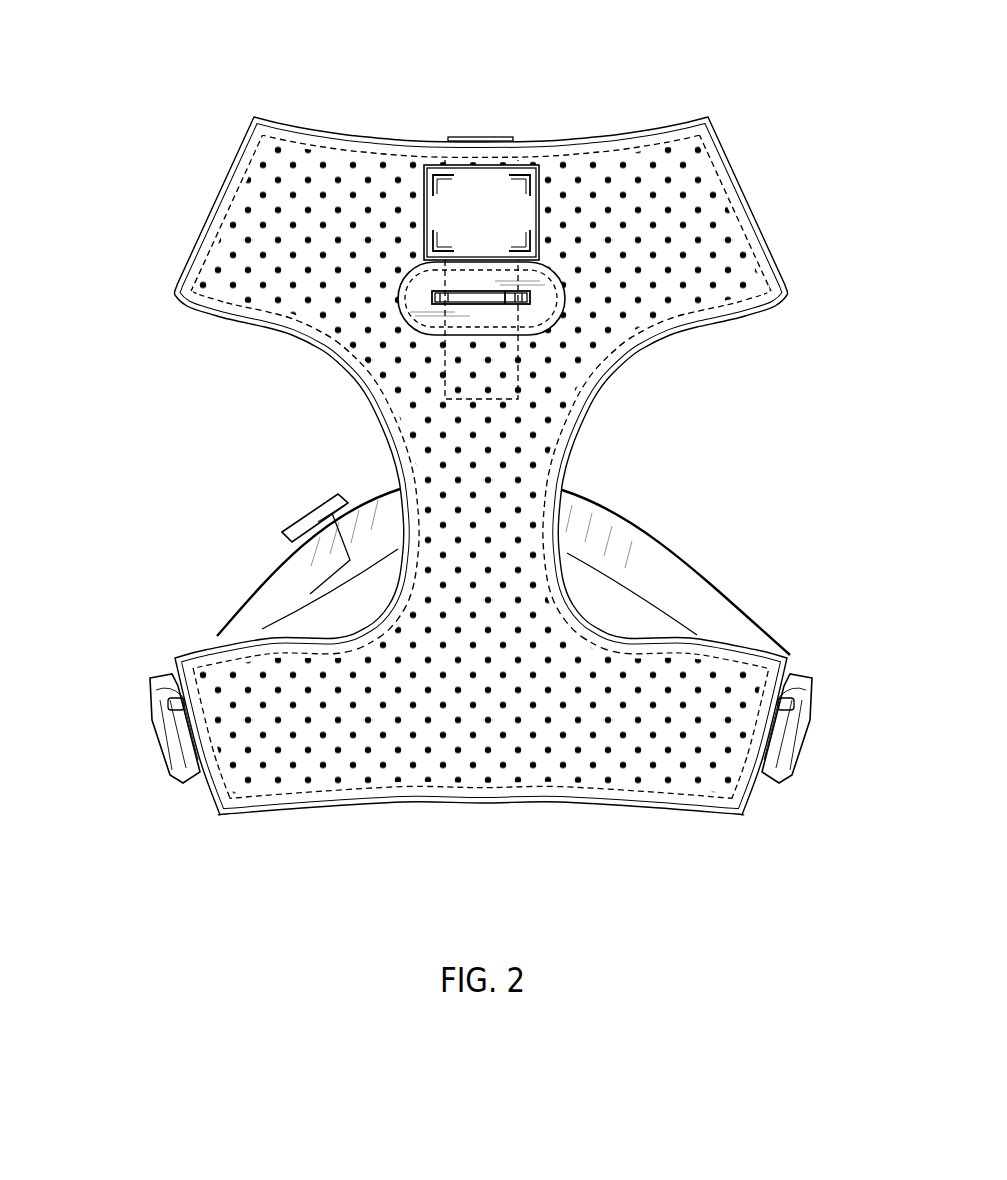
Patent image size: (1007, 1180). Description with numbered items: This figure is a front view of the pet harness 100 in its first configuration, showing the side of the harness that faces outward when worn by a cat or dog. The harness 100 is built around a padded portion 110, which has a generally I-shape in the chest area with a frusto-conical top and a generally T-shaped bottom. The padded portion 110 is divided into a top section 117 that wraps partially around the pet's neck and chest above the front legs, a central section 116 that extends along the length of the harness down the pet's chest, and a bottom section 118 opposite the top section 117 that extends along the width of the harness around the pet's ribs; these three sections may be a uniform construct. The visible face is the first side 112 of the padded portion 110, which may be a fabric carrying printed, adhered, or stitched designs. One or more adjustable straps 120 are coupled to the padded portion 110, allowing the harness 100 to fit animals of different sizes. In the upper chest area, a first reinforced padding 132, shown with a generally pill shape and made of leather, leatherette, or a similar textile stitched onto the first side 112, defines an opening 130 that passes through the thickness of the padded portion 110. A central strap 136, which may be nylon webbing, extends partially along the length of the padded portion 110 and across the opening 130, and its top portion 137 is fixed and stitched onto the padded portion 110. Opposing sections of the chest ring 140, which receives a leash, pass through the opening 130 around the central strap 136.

The harness 100 is at (449, 448).
The padded portion 110 is at (302, 330).
The first side 112 is at (225, 235).
The central section 116 is at (488, 474).
The top section 117 is at (571, 177).
The bottom section 118 is at (505, 770).
The straps 120 is at (260, 612).
The opening 130 is at (477, 305).
The first reinforced padding 132 is at (560, 303).
The central strap 136 is at (556, 262).
The top portion 137 is at (497, 160).
The chest ring 140 is at (505, 303).